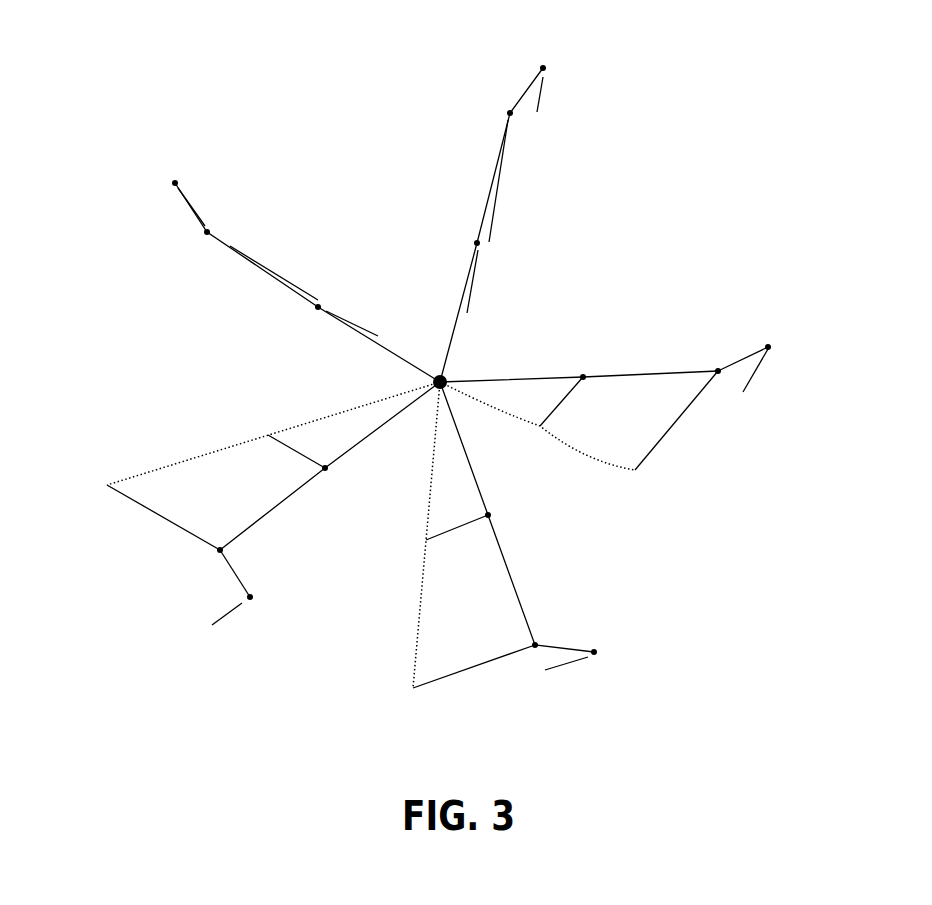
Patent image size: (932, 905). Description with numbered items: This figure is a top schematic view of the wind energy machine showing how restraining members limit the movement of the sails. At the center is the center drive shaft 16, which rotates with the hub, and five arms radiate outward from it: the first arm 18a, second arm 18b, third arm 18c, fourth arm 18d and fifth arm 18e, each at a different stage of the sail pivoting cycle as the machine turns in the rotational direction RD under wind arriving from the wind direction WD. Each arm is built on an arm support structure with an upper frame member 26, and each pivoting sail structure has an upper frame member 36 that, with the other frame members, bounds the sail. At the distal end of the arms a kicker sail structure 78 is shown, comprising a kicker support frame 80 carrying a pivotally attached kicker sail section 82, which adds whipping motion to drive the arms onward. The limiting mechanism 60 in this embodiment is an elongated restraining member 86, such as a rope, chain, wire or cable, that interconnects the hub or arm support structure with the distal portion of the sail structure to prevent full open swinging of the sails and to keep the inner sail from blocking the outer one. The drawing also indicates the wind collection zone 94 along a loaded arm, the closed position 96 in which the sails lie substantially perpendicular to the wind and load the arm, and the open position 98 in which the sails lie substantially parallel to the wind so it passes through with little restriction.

The center drive shaft 16 is at (445, 373).
The first arm 18a is at (514, 567).
The second arm 18b is at (679, 416).
The third arm 18c is at (513, 83).
The fourth arm 18d is at (242, 268).
The fifth arm 18e is at (251, 525).
The upper frame member 26 is at (628, 373).
The upper frame member 36 is at (670, 432).
The limiting mechanism 60 is at (418, 558).
The kicker sail structure 78 is at (747, 348).
The kicker support frame 80 is at (250, 568).
The kicker sail section 82 is at (238, 623).
The elongated restraining member 86 is at (210, 453).
The wind collection zone 94 is at (322, 275).
The closed position 96 is at (260, 243).
The open position 98 is at (617, 485).
The wind direction WD is at (630, 193).
The rotational direction RD is at (772, 495).